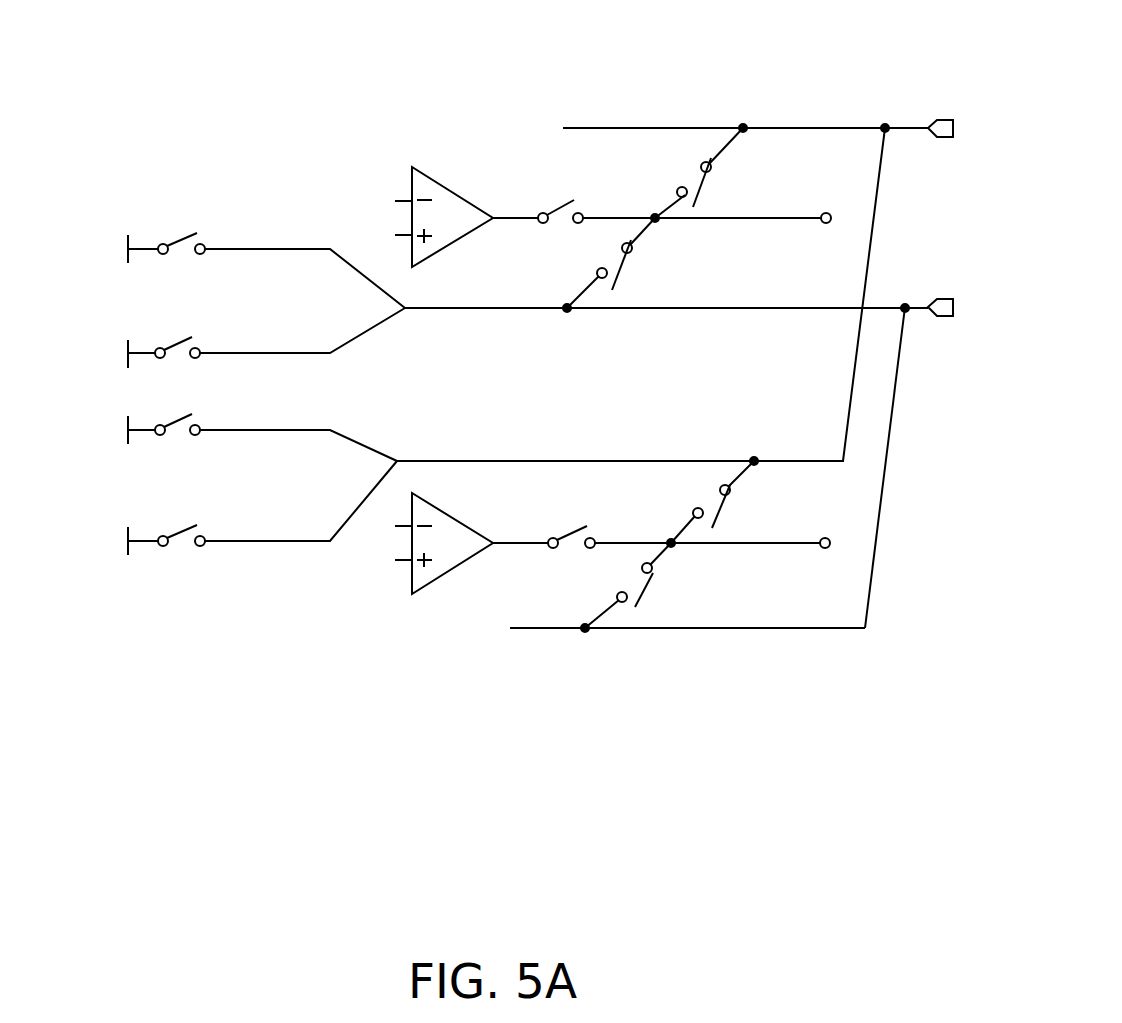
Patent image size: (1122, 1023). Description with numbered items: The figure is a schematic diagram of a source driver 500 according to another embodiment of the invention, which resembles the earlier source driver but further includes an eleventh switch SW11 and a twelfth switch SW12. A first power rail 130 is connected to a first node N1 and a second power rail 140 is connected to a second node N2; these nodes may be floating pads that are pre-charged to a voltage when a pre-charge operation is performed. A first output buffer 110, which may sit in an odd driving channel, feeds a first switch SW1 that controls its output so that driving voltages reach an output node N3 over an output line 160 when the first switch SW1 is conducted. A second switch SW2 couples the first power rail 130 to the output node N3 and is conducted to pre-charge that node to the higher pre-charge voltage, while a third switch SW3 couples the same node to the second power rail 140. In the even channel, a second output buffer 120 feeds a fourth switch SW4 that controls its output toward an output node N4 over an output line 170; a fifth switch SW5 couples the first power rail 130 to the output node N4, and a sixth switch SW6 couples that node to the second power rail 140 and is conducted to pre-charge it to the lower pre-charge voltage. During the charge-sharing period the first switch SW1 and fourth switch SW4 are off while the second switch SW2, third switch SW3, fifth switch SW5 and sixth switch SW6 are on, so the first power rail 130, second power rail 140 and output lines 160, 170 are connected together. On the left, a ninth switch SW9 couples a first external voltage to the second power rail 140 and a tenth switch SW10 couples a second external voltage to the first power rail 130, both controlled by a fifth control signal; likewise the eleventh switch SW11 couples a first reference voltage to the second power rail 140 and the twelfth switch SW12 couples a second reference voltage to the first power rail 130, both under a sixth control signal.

The source driver 500 is at (902, 593).
The first output buffer 110 is at (450, 188).
The second output buffer 120 is at (445, 508).
The first power rail 130 is at (635, 128).
The second power rail 140 is at (747, 628).
The output line 160 is at (743, 218).
The output line 170 is at (742, 543).
The first node N1 is at (946, 120).
The second node N2 is at (946, 299).
The output node N3 is at (826, 213).
The output node N4 is at (825, 538).
The first switch SW1 is at (563, 191).
The second switch SW2 is at (691, 173).
The third switch SW3 is at (622, 263).
The fourth switch SW4 is at (570, 519).
The fifth switch SW5 is at (708, 502).
The sixth switch SW6 is at (640, 585).
The ninth switch SW9 is at (224, 248).
The tenth switch SW10 is at (221, 510).
The eleventh switch SW11 is at (226, 331).
The twelfth switch SW12 is at (222, 416).